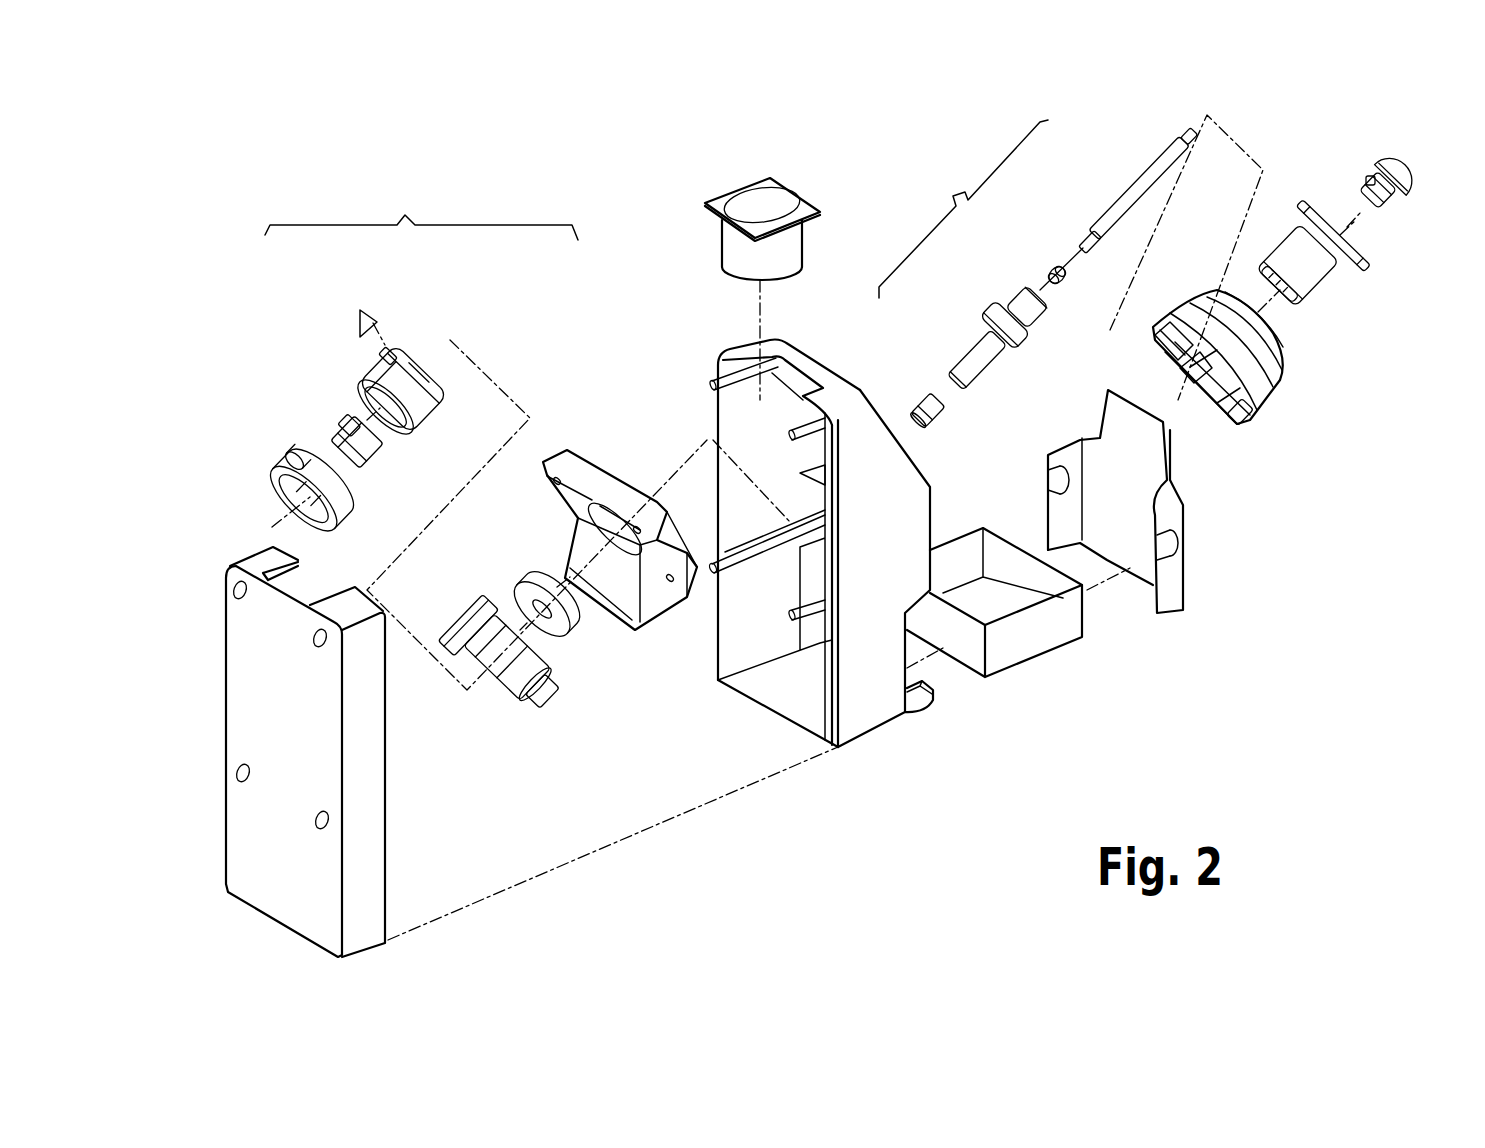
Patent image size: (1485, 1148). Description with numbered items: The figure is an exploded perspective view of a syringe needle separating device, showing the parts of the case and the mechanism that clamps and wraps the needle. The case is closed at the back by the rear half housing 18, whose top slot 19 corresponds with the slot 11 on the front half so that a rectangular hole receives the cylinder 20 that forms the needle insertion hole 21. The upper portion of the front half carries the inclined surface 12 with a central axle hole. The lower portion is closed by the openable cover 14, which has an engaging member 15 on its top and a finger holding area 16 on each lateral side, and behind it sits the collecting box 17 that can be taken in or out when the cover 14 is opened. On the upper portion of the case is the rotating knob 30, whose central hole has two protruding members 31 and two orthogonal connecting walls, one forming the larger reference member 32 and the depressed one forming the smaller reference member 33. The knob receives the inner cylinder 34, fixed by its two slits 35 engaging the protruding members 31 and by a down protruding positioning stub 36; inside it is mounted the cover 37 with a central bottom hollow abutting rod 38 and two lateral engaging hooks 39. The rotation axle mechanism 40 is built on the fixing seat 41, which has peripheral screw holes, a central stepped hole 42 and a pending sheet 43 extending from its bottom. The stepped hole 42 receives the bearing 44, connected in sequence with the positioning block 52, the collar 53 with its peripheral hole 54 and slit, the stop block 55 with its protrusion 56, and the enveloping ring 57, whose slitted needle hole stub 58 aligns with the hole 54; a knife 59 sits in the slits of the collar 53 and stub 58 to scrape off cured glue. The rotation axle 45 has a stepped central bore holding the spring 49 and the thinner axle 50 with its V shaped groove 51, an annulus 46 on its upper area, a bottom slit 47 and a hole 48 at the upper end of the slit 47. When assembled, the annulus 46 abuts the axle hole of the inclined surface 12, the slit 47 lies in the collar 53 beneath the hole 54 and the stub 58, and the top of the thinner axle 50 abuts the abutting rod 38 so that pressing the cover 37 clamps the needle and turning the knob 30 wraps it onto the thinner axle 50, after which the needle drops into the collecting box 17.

The slot 11 is at (795, 380).
The inclined surface 12 is at (930, 487).
The cover 14 is at (1167, 447).
The engaging member 15 is at (1128, 413).
The finger holding area 16 is at (1182, 565).
The collecting box 17 is at (1042, 640).
The rear half housing 18 is at (377, 850).
The slot 19 is at (306, 573).
The cylinder 20 is at (730, 255).
The needle insertion hole 21 is at (745, 197).
The rotating knob 30 is at (1272, 387).
The protruding members 31 is at (1152, 338).
The larger reference member 32 is at (1240, 418).
The smaller reference member 33 is at (1182, 362).
The inner cylinder 34 is at (1327, 287).
The slits 35 is at (1297, 308).
The protruding positioning stub 36 is at (1357, 273).
The cover 37 is at (1414, 185).
The bottom hollow abutting rod 38 is at (1373, 212).
The engaging hooks 39 is at (1368, 178).
The rotation axle mechanism 40 is at (656, 209).
The fixing seat 41 is at (580, 460).
The stepped hole 42 is at (603, 520).
The pending sheet 43 is at (657, 617).
The bearing 44 is at (567, 617).
The rotation axle 45 is at (957, 370).
The annulus 46 is at (990, 302).
The slit 47 is at (917, 405).
The hole 48 is at (955, 393).
The spring 49 is at (1055, 265).
The thinner axle 50 is at (1137, 180).
The V shaped groove 51 is at (1095, 246).
The positioning block 52 is at (520, 695).
The collar 53 is at (413, 350).
The hole 54 is at (380, 358).
The stop block 55 is at (362, 452).
The protrusion 56 is at (348, 448).
The enveloping ring 57 is at (275, 463).
The needle hole stub 58 is at (290, 452).
The knife 59 is at (365, 315).